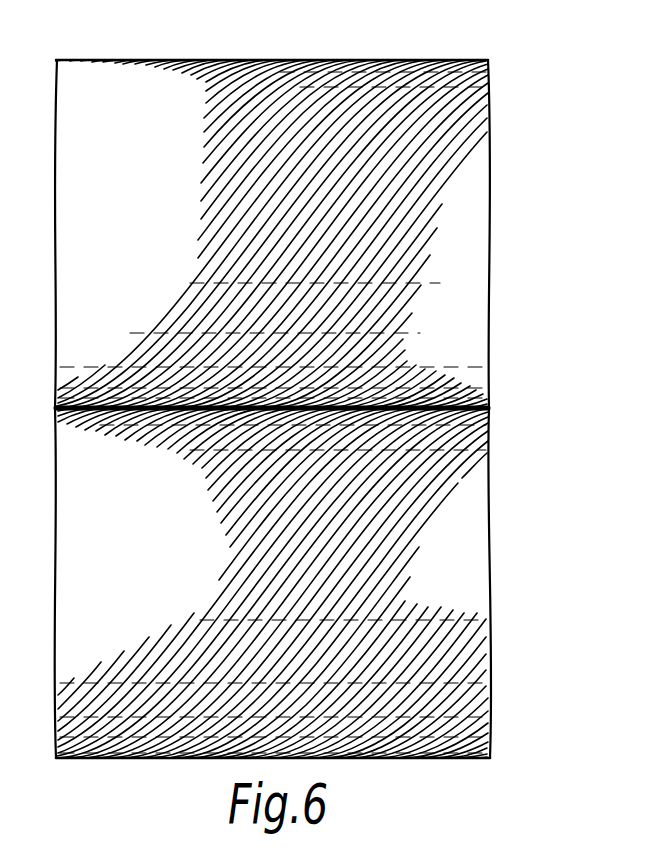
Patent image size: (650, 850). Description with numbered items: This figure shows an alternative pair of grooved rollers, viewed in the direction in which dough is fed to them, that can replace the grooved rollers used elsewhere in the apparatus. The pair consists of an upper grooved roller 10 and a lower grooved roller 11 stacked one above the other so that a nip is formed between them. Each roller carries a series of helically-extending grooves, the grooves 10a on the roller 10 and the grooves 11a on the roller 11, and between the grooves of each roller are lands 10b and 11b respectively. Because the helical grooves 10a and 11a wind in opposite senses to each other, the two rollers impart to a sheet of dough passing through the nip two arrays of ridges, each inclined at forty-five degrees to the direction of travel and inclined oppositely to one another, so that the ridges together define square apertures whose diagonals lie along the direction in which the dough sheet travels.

The grooved roller 10 is at (470, 259).
The helically-extending grooves 10a is at (440, 119).
The lands 10b is at (390, 100).
The grooved roller 11 is at (474, 572).
The helically-extending grooves 11a is at (377, 483).
The lands 11b is at (408, 693).